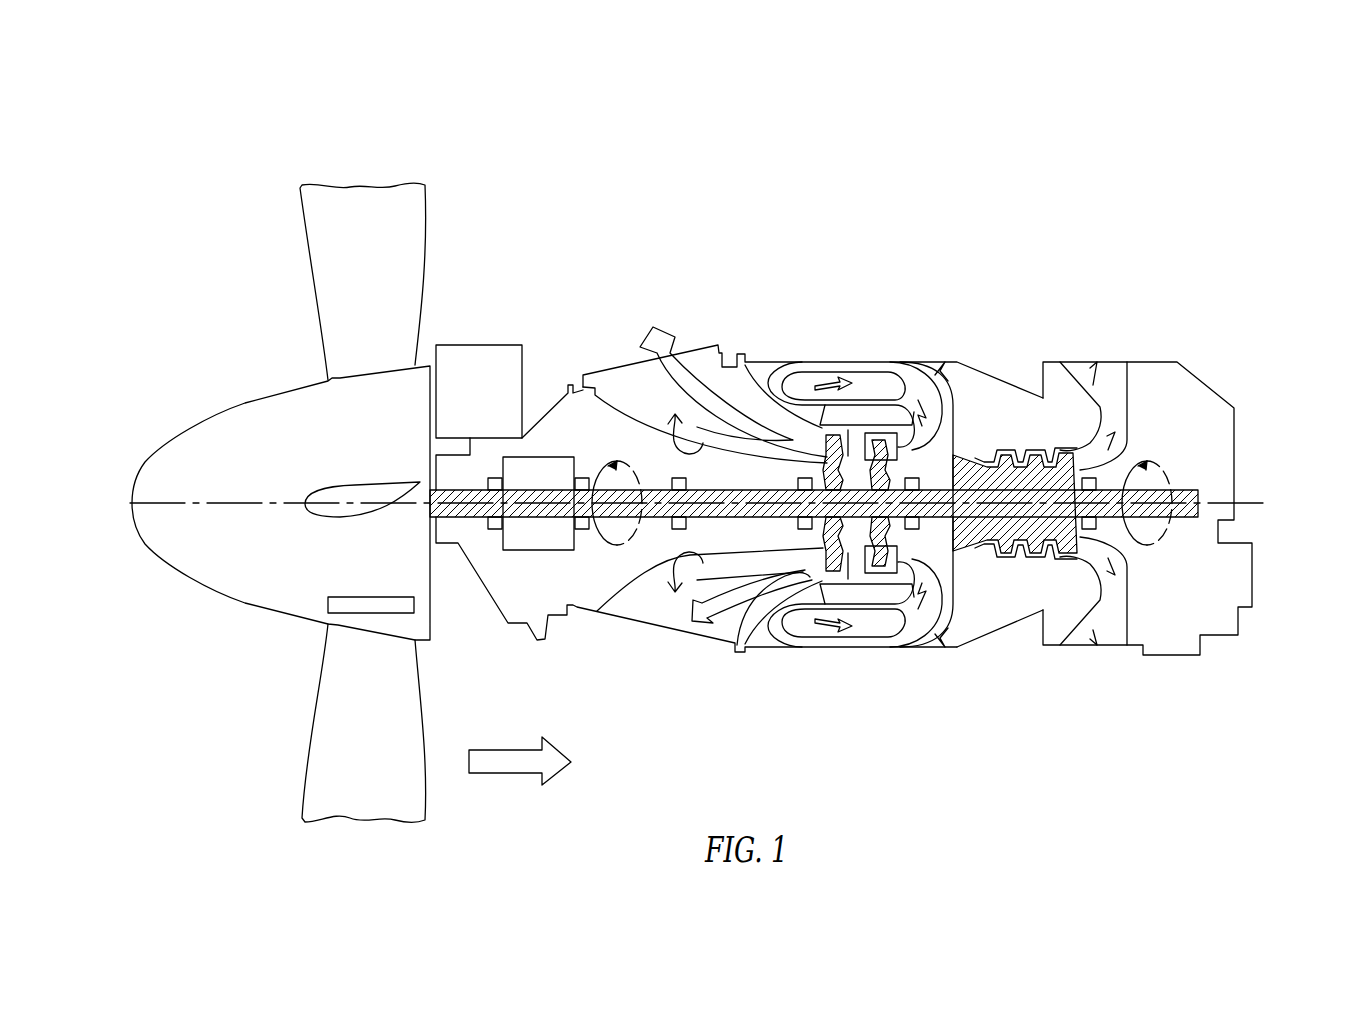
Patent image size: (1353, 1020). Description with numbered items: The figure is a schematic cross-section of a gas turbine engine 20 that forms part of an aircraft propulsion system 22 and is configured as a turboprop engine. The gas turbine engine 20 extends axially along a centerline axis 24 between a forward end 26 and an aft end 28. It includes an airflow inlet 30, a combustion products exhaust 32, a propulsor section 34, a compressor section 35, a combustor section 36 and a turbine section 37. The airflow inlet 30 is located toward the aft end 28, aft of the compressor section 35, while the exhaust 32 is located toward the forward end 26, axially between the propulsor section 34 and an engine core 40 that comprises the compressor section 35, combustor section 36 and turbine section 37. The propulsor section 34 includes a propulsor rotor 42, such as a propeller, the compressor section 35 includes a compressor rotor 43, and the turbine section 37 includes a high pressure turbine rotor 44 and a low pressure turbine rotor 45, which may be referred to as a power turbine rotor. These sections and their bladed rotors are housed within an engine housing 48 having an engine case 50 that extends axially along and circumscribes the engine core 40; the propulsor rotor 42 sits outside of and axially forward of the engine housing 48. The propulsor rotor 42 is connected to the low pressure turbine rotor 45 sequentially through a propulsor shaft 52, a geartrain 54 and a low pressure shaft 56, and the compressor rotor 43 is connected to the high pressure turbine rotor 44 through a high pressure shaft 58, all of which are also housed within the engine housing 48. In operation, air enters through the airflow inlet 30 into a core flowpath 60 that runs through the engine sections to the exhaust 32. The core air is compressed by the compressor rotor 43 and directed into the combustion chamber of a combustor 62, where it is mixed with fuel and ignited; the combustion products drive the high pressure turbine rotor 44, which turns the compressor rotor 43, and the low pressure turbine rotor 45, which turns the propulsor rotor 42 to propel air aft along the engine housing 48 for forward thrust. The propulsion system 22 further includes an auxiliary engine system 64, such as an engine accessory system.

The gas turbine engine 20 is at (782, 254).
The propulsion system 22 is at (1022, 214).
The centerline axis 24 is at (1262, 487).
The forward end 26 is at (132, 520).
The aft end 28 is at (1252, 572).
The airflow inlet 30 is at (1115, 360).
The combustion products exhaust 32 is at (700, 335).
The propulsor section 34 is at (356, 170).
The compressor section 35 is at (1020, 568).
The combustor section 36 is at (818, 370).
The turbine section 37 is at (860, 400).
The engine core 40 is at (963, 358).
The propulsor rotor 42 is at (325, 627).
The compressor rotor 43 is at (1020, 470).
The high pressure turbine rotor 44 is at (875, 555).
The low pressure turbine rotor 45 is at (820, 540).
The engine housing 48 is at (842, 652).
The engine case 50 is at (515, 632).
The propulsor shaft 52 is at (468, 512).
The geartrain 54 is at (553, 445).
The low pressure shaft 56 is at (660, 488).
The high pressure shaft 58 is at (935, 527).
The core flowpath 60 is at (705, 627).
The combustor 62 is at (905, 370).
The auxiliary engine system 64 is at (487, 338).